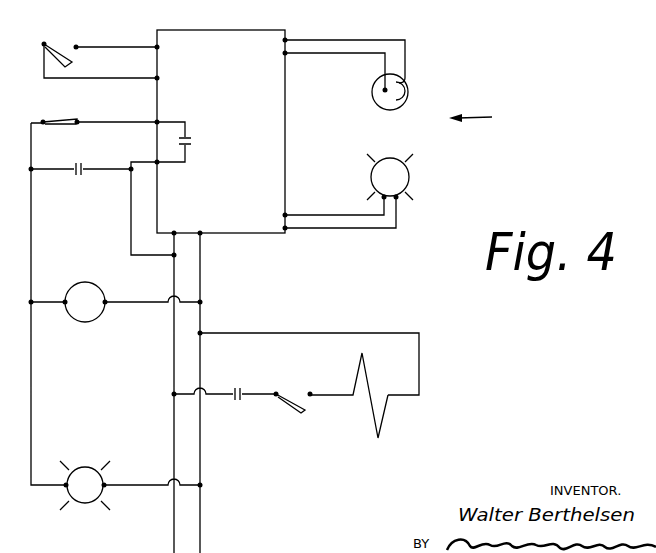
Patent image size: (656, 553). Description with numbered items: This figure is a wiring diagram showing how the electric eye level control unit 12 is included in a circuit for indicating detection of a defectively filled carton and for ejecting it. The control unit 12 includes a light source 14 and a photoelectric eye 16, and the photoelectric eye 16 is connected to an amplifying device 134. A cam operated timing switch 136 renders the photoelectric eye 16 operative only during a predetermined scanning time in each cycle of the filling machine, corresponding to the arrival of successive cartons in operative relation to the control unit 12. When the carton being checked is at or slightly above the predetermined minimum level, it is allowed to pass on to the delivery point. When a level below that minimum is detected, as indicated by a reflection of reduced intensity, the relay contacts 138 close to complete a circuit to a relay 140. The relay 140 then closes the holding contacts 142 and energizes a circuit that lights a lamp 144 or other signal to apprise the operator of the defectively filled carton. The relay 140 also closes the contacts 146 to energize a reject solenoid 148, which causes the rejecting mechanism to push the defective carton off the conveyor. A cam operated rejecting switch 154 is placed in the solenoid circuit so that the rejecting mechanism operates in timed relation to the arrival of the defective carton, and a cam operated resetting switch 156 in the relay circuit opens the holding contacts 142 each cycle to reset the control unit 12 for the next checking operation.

The electric eye level control unit 12 is at (483, 118).
The light source 14 is at (412, 172).
The photoelectric eye 16 is at (412, 98).
The amplifying device 134 is at (285, 125).
The cam operated timing switch 136 is at (60, 57).
The relay contacts 138 is at (191, 137).
The relay 140 is at (87, 322).
The holding contacts 142 is at (77, 165).
The lamp 144 is at (88, 467).
The contacts 146 is at (252, 373).
The reject solenoid 148 is at (383, 418).
The cam operated rejecting switch 154 is at (305, 411).
The cam operated resetting switch 156 is at (57, 119).